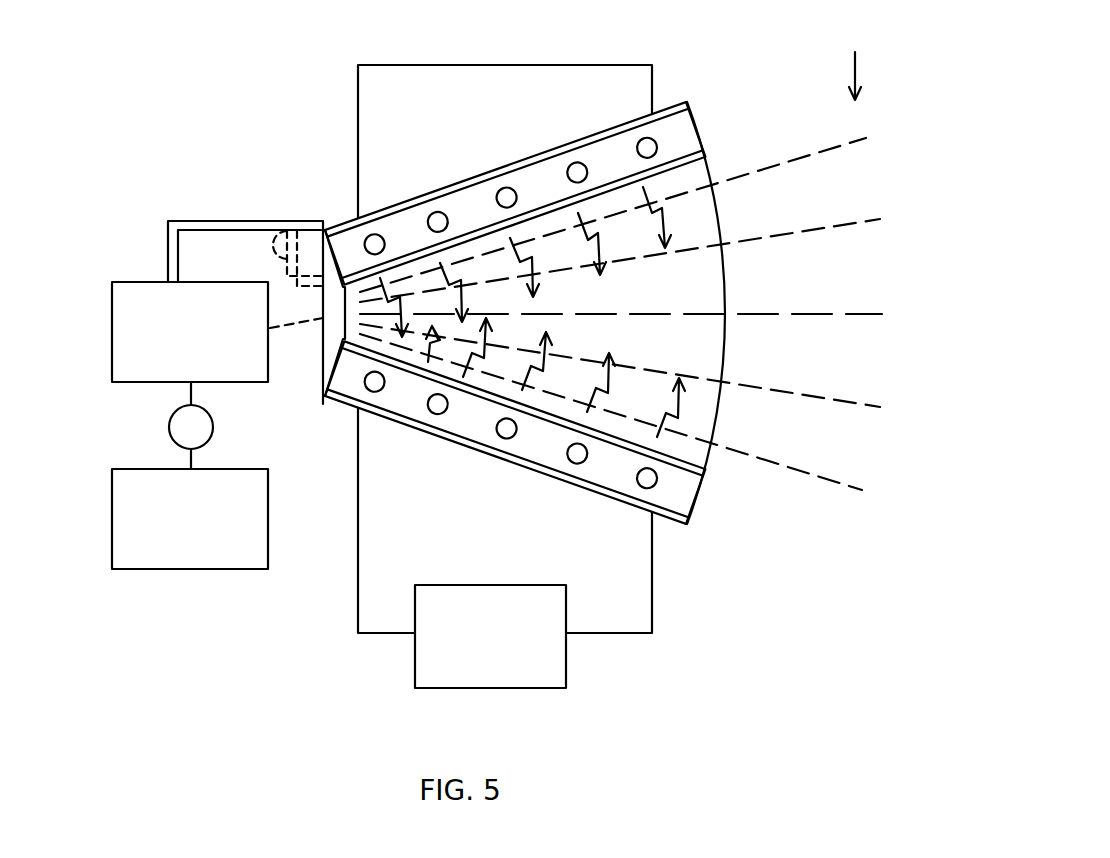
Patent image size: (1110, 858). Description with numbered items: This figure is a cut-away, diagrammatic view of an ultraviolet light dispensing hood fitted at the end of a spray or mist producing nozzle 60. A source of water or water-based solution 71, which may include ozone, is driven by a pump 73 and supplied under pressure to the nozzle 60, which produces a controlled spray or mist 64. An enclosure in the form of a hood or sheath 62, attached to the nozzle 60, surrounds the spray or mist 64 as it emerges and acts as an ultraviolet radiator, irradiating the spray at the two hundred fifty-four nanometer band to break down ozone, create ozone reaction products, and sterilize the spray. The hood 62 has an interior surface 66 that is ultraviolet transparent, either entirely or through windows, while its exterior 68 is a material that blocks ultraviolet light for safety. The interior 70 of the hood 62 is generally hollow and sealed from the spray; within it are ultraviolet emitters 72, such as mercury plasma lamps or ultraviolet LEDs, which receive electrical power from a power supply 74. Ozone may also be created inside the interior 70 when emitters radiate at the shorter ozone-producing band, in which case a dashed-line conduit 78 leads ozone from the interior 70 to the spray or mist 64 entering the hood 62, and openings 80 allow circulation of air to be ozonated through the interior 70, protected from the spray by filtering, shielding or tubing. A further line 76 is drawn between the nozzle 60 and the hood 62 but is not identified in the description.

The nozzle 60 is at (112, 282).
The hood 62 is at (684, 98).
The spray or mist 64 is at (852, 62).
The interior surface 66 is at (710, 167).
The exterior 68 is at (498, 456).
The interior 70 is at (473, 212).
The water-based solution 71 is at (112, 528).
The ultraviolet emitters 72 is at (574, 158).
The pump 73 is at (169, 432).
The power supply 74 is at (566, 672).
The supply pipe 76 is at (240, 220).
The conduit 78 is at (281, 220).
The openings 80 is at (623, 120).